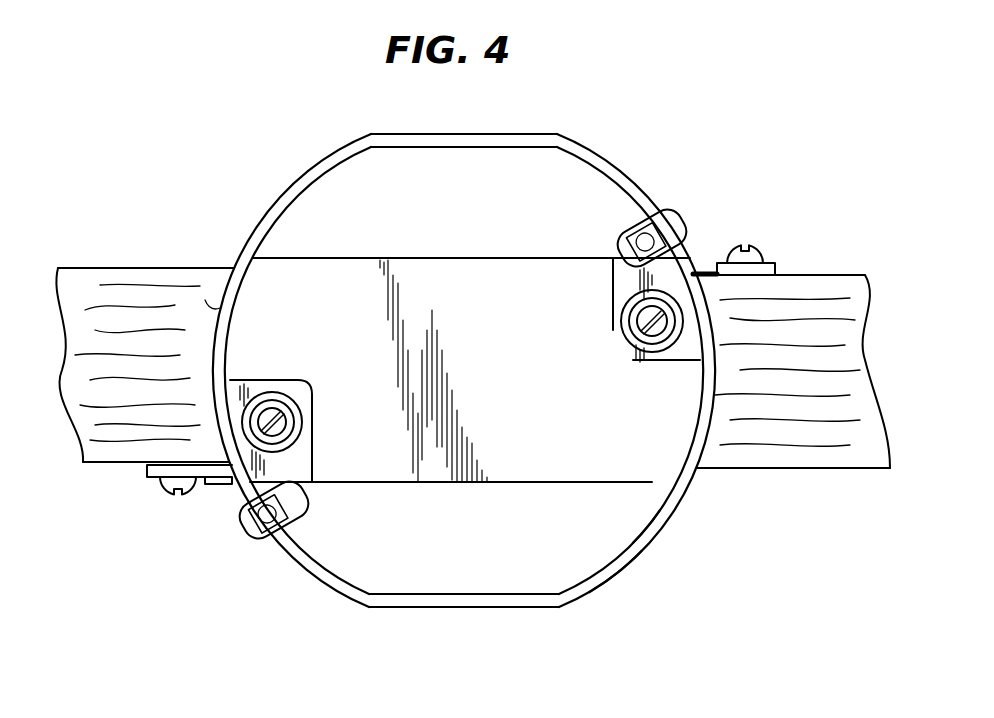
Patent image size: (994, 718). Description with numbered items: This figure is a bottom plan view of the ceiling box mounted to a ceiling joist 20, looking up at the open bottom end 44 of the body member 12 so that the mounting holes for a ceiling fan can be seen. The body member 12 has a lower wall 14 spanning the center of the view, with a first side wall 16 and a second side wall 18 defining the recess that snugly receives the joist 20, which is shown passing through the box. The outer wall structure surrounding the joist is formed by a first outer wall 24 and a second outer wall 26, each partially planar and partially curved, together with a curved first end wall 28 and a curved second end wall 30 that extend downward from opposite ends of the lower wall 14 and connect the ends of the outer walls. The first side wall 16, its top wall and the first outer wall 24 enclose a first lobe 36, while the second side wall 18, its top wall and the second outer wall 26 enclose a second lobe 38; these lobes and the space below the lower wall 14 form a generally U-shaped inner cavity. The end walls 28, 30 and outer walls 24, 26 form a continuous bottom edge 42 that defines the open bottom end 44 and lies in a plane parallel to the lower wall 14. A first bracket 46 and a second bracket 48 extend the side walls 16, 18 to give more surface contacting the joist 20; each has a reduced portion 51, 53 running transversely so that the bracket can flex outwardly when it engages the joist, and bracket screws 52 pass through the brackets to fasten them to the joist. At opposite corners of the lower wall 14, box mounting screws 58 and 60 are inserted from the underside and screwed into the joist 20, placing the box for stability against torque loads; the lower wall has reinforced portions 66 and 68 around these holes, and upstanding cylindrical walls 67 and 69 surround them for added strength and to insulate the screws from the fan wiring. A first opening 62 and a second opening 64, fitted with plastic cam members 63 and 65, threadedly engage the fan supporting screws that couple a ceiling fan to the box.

The body member 12 is at (625, 165).
The lower wall 14 is at (485, 290).
The first side wall 16 is at (650, 485).
The second side wall 18 is at (287, 255).
The ceiling joist 20 is at (120, 266).
The first outer wall 24 is at (505, 608).
The second outer wall 26 is at (470, 132).
The first end wall 28 is at (208, 300).
The second end wall 30 is at (720, 335).
The first lobe 36 is at (570, 540).
The second lobe 38 is at (387, 178).
The bottom edge 42 is at (650, 540).
The open bottom end 44 is at (425, 560).
The first bracket 46 is at (148, 469).
The second bracket 48 is at (776, 262).
The reduced portion 51 is at (218, 486).
The bracket screw 52 is at (760, 250).
The reduced portion 53 is at (726, 245).
The box mounting screw 58 is at (270, 412).
The box mounting screw 60 is at (645, 342).
The first opening 62 is at (272, 536).
The cam member 63 is at (312, 512).
The second opening 64 is at (660, 214).
The cam member 65 is at (688, 237).
The reinforced portion 66 is at (305, 452).
The upstanding cylindrical wall 67 is at (300, 412).
The reinforced portion 68 is at (680, 350).
The upstanding cylindrical wall 69 is at (640, 322).